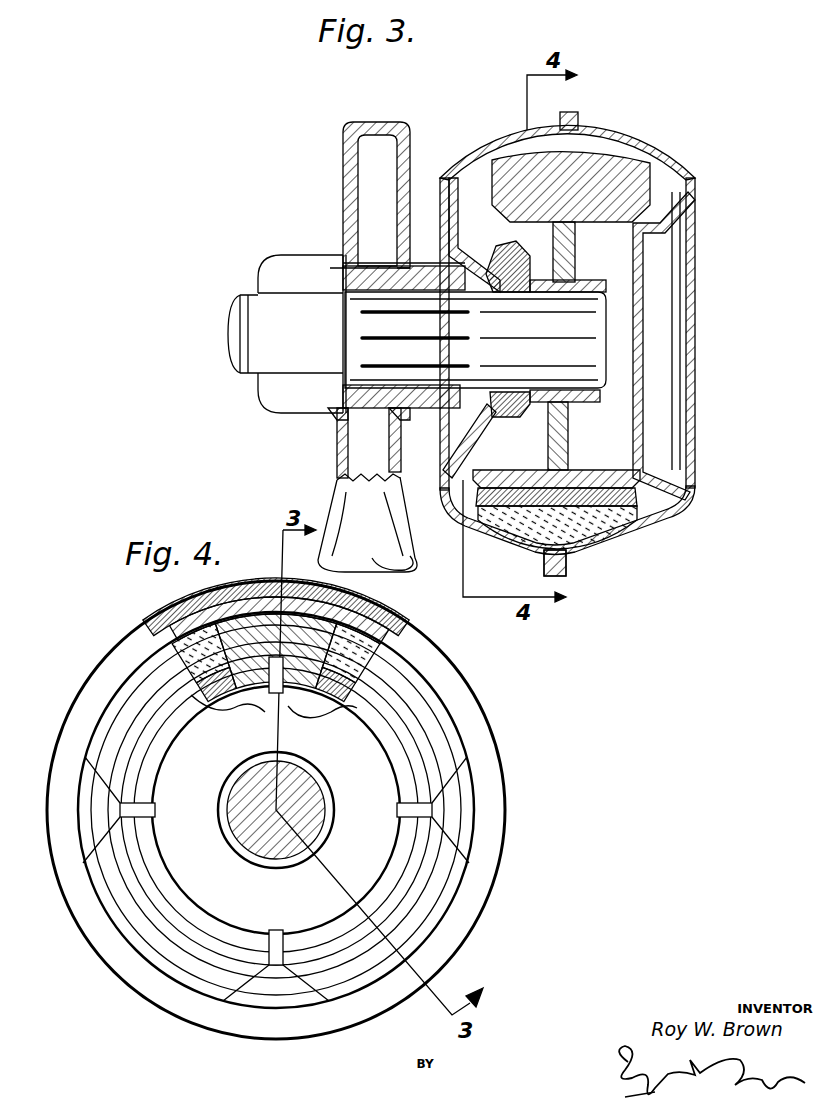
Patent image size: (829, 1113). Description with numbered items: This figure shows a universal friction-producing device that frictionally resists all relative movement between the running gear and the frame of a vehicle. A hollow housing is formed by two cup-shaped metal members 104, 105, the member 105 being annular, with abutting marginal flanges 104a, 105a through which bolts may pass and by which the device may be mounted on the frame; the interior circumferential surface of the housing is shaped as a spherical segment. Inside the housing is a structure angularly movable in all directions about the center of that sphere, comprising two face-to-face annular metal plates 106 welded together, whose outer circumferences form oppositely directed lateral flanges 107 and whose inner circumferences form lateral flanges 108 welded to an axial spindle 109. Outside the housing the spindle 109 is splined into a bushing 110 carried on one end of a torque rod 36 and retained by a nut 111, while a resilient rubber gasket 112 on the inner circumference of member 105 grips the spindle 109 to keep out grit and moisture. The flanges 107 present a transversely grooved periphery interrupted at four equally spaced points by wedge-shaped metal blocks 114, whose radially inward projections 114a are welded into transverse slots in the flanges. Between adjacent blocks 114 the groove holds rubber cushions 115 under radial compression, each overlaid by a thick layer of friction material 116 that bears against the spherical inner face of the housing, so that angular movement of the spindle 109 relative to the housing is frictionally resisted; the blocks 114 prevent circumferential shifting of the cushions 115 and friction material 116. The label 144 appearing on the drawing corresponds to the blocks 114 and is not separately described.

In FIG. 3, the torque rod 36 is at (410, 556).
In FIG. 3, the housing member 104 is at (682, 175).
In FIG. 4, the housing member 104 is at (380, 630).
In FIG. 3, the marginal flange 104a is at (566, 570).
In FIG. 3, the housing member 105 is at (458, 168).
In FIG. 3, the marginal flange 105a is at (544, 570).
In FIG. 3, the annular metal plate 106 is at (548, 440).
In FIG. 3, the lateral flange 107 is at (535, 476).
In FIG. 4, the lateral flange 107 is at (227, 686).
In FIG. 3, the lateral flange 108 is at (545, 280).
In FIG. 4, the lateral flange 108 is at (250, 862).
In FIG. 3, the spindle 109 is at (590, 368).
In FIG. 4, the spindle 109 is at (310, 832).
In FIG. 3, the bushing 110 is at (340, 410).
In FIG. 3, the nut 111 is at (297, 270).
In FIG. 3, the rubber gasket 112 is at (490, 272).
In FIG. 3, the metal block 114 is at (612, 175).
In FIG. 4, the metal block 114 is at (263, 630).
In FIG. 4, the radially inwardly extending projection 114a is at (155, 799).
In FIG. 3, the rubber cushion 115 is at (670, 520).
In FIG. 4, the rubber cushion 115 is at (180, 648).
In FIG. 3, the friction material 116 is at (603, 552).
In FIG. 4, the friction material 116 is at (162, 620).
In FIG. 4, the pocket flare 144 is at (447, 813).